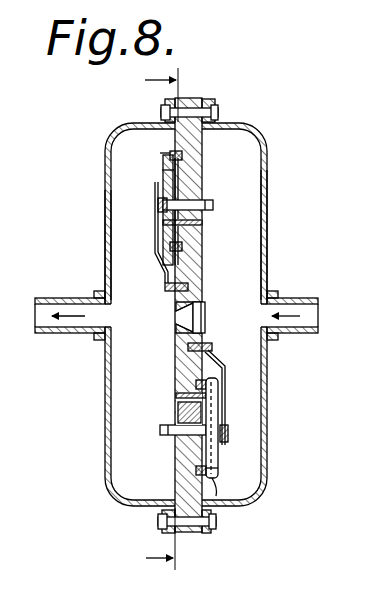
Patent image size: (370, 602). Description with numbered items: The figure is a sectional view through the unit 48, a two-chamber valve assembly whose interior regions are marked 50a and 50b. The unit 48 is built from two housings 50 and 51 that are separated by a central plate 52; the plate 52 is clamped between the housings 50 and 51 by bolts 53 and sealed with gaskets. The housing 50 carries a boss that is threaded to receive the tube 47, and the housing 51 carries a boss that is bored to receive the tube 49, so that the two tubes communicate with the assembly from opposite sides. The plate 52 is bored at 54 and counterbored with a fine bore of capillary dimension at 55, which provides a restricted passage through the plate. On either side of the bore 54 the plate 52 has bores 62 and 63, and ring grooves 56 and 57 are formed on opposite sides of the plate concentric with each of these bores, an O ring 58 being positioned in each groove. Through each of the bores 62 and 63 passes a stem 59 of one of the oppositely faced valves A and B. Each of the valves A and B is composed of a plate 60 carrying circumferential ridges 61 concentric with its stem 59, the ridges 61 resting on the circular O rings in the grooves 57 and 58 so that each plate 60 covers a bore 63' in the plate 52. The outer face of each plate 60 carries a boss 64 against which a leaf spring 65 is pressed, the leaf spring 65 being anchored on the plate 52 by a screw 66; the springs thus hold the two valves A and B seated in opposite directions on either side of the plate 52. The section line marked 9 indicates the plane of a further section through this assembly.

The unit 48 is at (116, 120).
The tube 49 is at (60, 298).
The tube 47 is at (300, 298).
The housing 50 is at (268, 158).
The housing 51 is at (106, 168).
The upper chamber 50a is at (257, 285).
The lower chamber 50b is at (165, 362).
The plate 52 is at (200, 102).
The bolts 53 is at (218, 112).
The bore 54 is at (205, 317).
The capillary bore 55 is at (175, 316).
The ring groove 56 is at (172, 152).
The ring groove 57 is at (196, 470).
The O ring 58 is at (183, 250).
The stem 59 is at (214, 203).
The plate 60 is at (114, 152).
The circumferential ridges 61 is at (219, 382).
The bore 62 is at (178, 410).
The bore 63 is at (204, 210).
The bore 63' is at (195, 307).
The boss 64 is at (157, 216).
The leaf spring 65 is at (158, 205).
The screw 66 is at (166, 287).
The valve A is at (218, 468).
The valve B is at (162, 170).
The section line 9- 9 is at (150, 320).